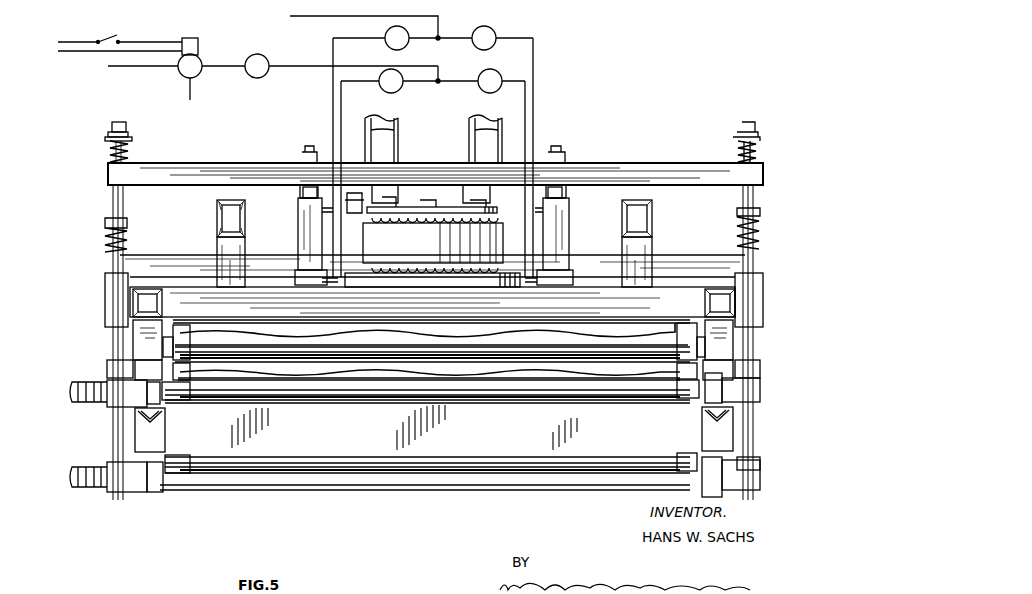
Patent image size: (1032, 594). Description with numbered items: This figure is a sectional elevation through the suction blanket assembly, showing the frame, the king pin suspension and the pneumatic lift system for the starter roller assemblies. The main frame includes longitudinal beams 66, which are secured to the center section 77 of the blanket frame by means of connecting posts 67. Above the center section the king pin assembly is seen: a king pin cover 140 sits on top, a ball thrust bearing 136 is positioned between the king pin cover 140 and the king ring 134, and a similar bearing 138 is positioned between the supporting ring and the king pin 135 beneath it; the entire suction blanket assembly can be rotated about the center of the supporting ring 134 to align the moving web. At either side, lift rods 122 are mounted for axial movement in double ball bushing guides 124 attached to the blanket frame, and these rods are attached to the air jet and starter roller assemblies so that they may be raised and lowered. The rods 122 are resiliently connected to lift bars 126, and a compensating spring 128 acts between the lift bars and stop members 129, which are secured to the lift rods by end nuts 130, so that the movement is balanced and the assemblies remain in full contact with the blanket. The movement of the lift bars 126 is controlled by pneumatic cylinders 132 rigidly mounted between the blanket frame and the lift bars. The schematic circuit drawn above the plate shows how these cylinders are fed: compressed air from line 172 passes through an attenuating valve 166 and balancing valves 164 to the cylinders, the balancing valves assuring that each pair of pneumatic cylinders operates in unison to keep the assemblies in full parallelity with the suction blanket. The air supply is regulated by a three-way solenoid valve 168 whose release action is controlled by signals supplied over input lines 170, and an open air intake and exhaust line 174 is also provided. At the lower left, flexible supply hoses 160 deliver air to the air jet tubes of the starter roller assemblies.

The longitudinal beams 66 is at (217, 218).
The connecting posts 67 is at (217, 246).
The center section 77 is at (680, 285).
The lift rods 122 is at (753, 212).
The double ball bushing guides 124 is at (763, 318).
The lift bars 126 is at (228, 162).
The compensating spring 128 is at (130, 155).
The stop members 129 is at (130, 138).
The end nuts 130 is at (126, 125).
The pneumatic cylinders 132 is at (298, 228).
The king ring 134 is at (414, 246).
The king pin 135 is at (520, 280).
The ball thrust bearing 136 is at (445, 232).
The bearing 138 is at (393, 266).
The king pin cover 140 is at (458, 202).
The flexible supply hoses 160 is at (70, 392).
The balancing valves 164 is at (479, 78).
The attenuating valve 166 is at (280, 50).
The three-way solenoid valve 168 is at (200, 62).
The input lines 170 is at (56, 50).
The line 172 is at (143, 68).
The open air intake and exhaust line 174 is at (350, 18).